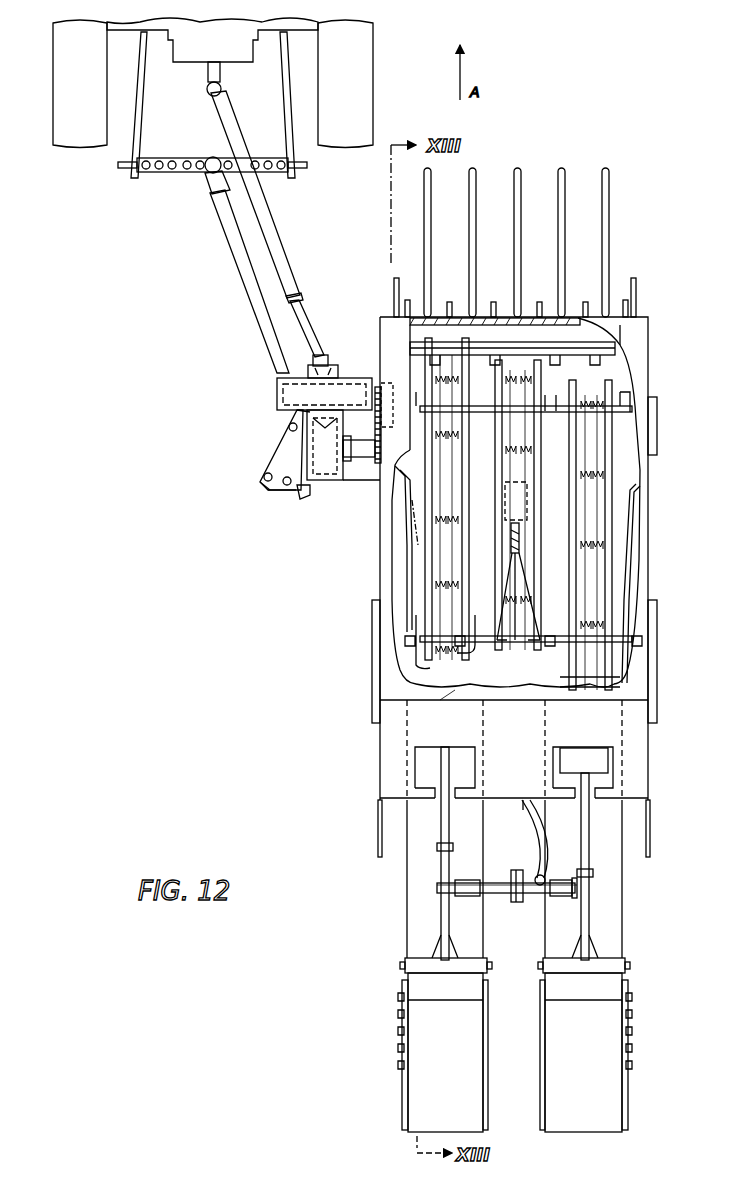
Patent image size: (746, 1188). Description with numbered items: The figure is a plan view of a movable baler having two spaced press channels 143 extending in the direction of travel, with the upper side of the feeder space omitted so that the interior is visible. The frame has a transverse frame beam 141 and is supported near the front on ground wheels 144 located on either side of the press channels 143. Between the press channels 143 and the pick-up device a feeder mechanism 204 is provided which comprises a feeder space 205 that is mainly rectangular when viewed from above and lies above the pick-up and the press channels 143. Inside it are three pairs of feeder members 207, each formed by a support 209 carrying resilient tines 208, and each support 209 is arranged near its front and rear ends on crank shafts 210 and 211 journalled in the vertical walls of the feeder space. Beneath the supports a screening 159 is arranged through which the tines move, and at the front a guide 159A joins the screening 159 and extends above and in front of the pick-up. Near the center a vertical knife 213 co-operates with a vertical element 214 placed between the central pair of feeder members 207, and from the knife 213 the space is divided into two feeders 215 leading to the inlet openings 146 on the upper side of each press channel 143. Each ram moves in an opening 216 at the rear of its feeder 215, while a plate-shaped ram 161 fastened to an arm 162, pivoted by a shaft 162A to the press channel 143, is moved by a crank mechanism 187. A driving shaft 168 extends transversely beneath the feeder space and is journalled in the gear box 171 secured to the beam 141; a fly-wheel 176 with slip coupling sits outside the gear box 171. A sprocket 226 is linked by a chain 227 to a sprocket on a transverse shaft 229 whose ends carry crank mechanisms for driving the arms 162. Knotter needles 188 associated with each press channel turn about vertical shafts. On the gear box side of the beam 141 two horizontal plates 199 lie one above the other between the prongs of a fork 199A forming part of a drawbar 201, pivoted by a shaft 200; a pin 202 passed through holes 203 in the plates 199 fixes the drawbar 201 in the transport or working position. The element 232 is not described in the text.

The frame beam 141 is at (368, 474).
The press channel 143 is at (407, 910).
The ground wheels 144 is at (374, 681).
The inlet opening 146 is at (440, 700).
The screening 159 is at (600, 363).
The guide 159A is at (558, 174).
The plate-shaped ram 161 is at (585, 750).
The arm 162 is at (440, 826).
The shaft 162A is at (405, 964).
The driving shaft 168 is at (282, 249).
The gear box 171 is at (346, 482).
The fly-wheel 176 is at (277, 397).
The crank mechanism 187 is at (462, 897).
The needles 188 is at (523, 805).
The horizontal plates 199 is at (272, 455).
The fork 199A is at (268, 492).
The shaft 200 is at (290, 427).
The drawbar 201 is at (232, 237).
The pin 202 is at (300, 498).
The holes 203 is at (259, 483).
The feeder mechanism 204 is at (378, 324).
The feeder space 205 is at (409, 588).
The feeder members 207 is at (605, 520).
The resilient tines 208 is at (552, 480).
The support 209 is at (434, 496).
The crank shaft 210 is at (582, 430).
The crank shaft 211 is at (523, 651).
The vertical knife 213 is at (511, 542).
The vertical element 214 is at (518, 505).
The feeders 215 is at (622, 592).
The opening 216 is at (418, 760).
The sprocket 226 is at (518, 902).
The chain 227 is at (515, 825).
The shaft 229 is at (495, 892).
The gear rack 232 is at (378, 369).